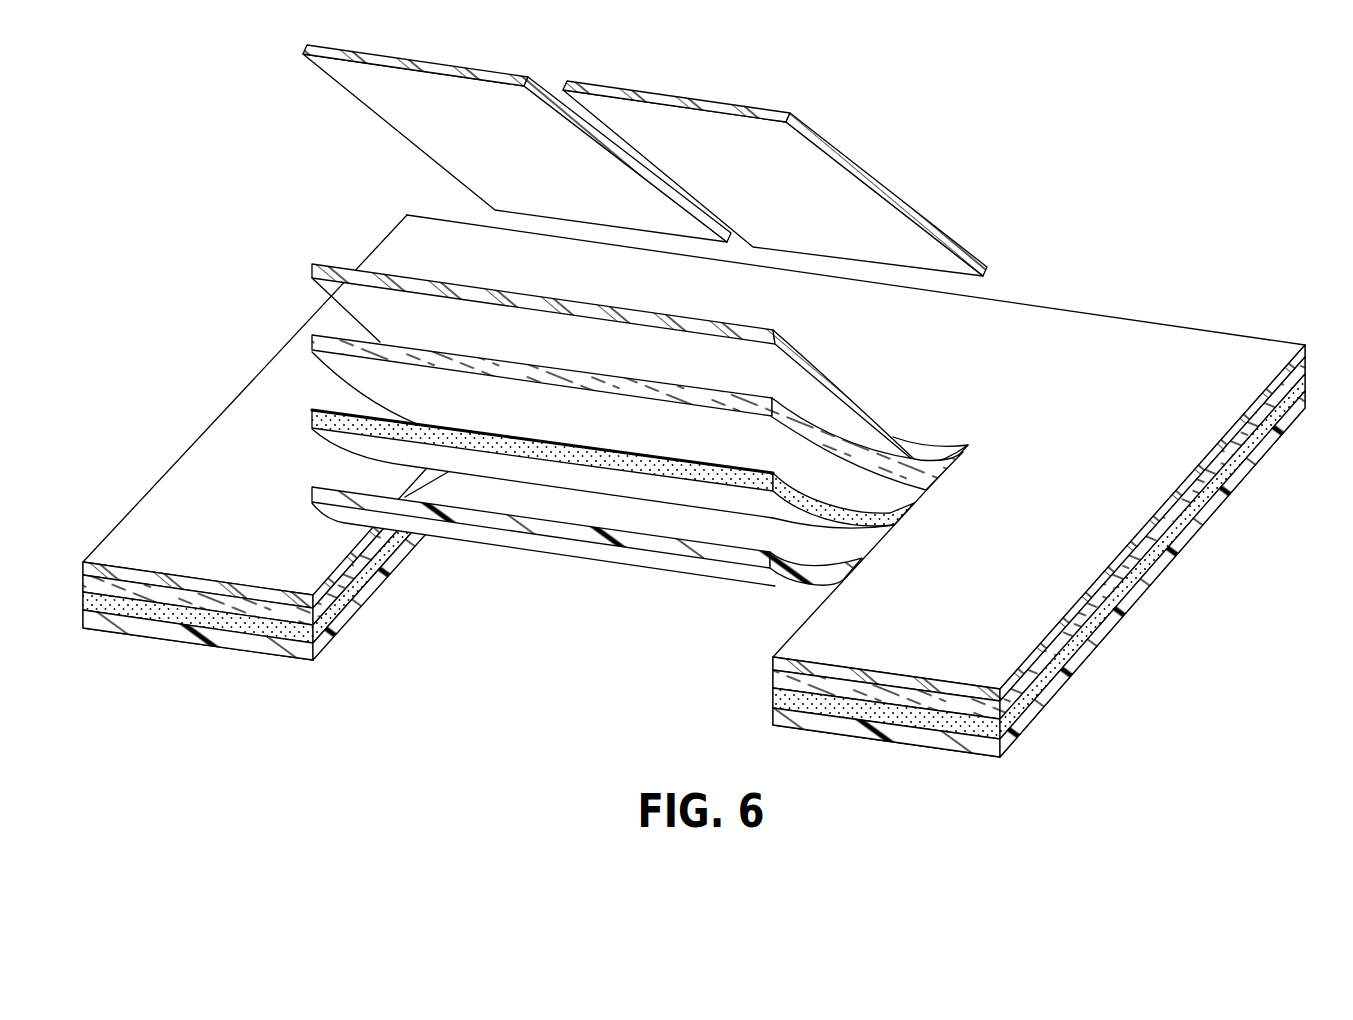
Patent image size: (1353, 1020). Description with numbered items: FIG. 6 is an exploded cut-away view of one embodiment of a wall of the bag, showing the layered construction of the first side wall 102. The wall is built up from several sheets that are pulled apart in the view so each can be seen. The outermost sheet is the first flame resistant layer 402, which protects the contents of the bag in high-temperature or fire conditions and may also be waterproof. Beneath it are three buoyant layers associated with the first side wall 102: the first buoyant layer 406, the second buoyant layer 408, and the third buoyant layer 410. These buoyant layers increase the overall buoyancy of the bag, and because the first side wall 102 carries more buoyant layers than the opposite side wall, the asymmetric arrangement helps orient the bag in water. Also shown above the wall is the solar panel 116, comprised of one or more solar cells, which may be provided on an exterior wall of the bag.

The first side wall 102 is at (1111, 199).
The solar panel 116 is at (858, 170).
The first flame resistant layer 402 is at (828, 388).
The first buoyant layer 406 is at (312, 492).
The second buoyant layer 408 is at (312, 418).
The third buoyant layer 410 is at (312, 342).